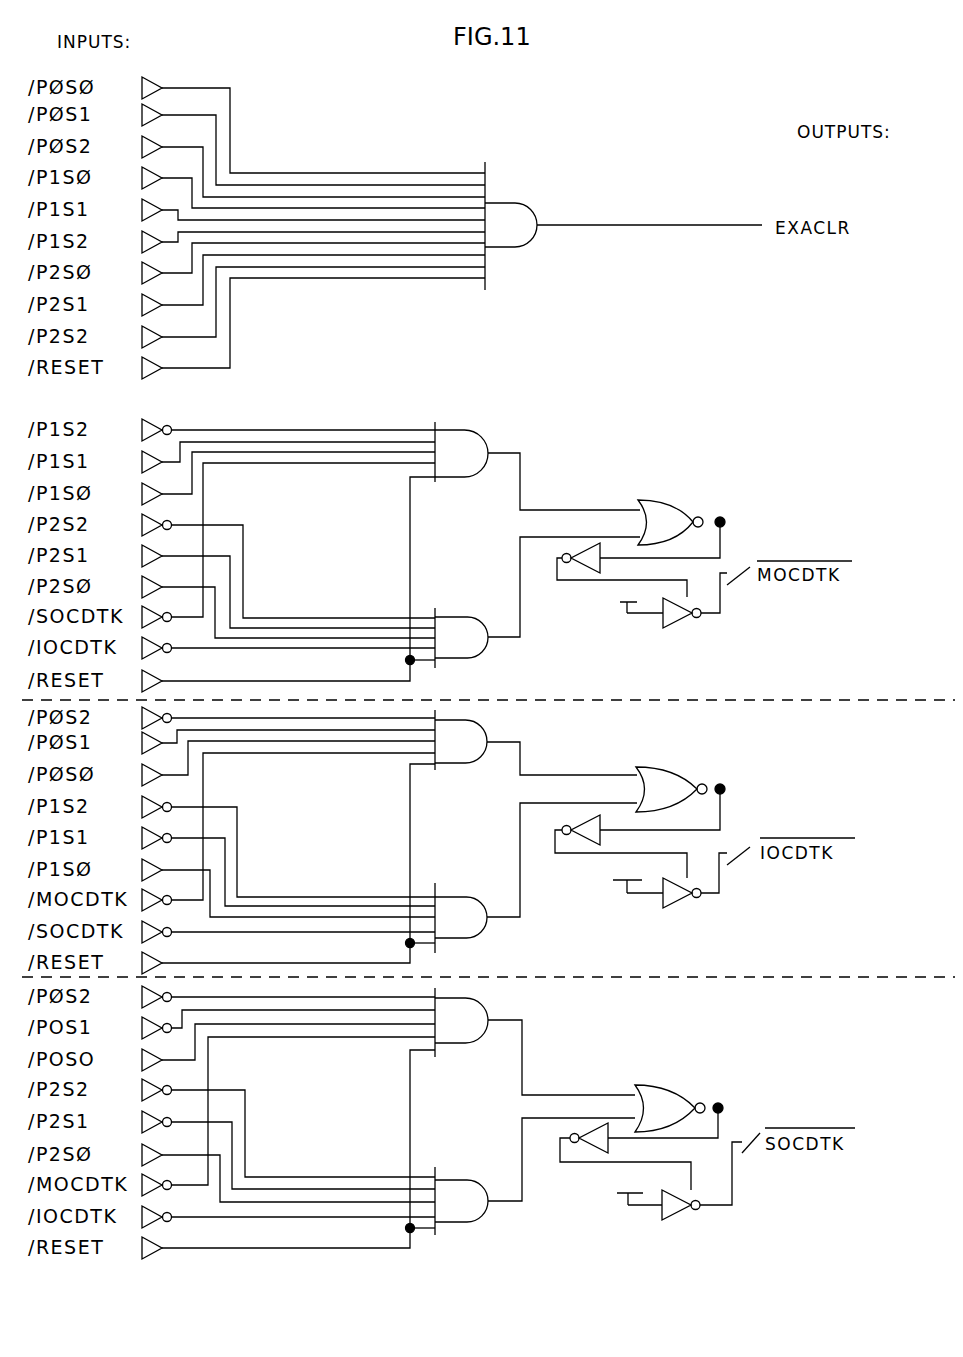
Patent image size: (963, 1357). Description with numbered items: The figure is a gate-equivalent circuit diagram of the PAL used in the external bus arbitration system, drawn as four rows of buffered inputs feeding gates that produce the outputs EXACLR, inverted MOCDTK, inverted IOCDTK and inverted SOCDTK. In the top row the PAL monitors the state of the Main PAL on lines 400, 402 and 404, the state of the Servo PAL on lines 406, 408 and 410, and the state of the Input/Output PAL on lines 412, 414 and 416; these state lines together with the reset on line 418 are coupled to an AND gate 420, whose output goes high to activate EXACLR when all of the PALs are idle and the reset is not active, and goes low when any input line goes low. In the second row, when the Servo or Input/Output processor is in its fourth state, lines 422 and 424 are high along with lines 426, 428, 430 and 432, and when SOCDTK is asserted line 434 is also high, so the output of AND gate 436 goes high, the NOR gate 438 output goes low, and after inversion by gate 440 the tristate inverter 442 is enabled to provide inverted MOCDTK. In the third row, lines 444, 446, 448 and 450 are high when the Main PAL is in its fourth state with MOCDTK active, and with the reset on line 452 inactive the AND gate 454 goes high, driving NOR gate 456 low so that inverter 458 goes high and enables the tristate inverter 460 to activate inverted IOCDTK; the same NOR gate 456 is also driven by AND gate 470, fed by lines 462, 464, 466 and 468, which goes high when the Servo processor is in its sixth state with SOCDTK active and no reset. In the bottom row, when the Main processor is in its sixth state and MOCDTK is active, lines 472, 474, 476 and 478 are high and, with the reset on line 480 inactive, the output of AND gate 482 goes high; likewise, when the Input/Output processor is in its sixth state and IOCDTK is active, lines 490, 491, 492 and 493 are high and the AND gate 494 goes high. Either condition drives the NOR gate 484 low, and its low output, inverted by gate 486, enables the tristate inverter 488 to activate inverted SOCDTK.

The line 400 is at (180, 88).
The line 402 is at (170, 114).
The line 404 is at (167, 147).
The line 406 is at (182, 200).
The line 408 is at (205, 197).
The line 410 is at (206, 247).
The line 412 is at (172, 250).
The line 414 is at (161, 308).
The line 416 is at (164, 339).
The reset line 418 is at (193, 370).
The AND gate 420 is at (521, 236).
The line 422 is at (300, 428).
The line 424 is at (245, 547).
The line 426 is at (351, 445).
The line 428 is at (302, 455).
The line 430 is at (265, 619).
The line 432 is at (331, 638).
The line 434 is at (240, 466).
The AND gate 436 is at (468, 440).
The NOR gate 438 is at (684, 510).
The inverter 440 is at (580, 575).
The tristate inverter 442 is at (684, 625).
The line 444 is at (242, 720).
The line 446 is at (282, 732).
The line 448 is at (318, 744).
The line 450 is at (362, 756).
The reset line 452 is at (192, 950).
The AND gate 454 is at (467, 757).
The NOR gate 456 is at (668, 780).
The inverter 458 is at (580, 826).
The tristate inverter 460 is at (683, 898).
The line 462 is at (252, 893).
The line 464 is at (290, 903).
The line 466 is at (343, 917).
The line 468 is at (373, 932).
The AND gate 470 is at (475, 930).
The line 472 is at (248, 999).
The line 474 is at (280, 1012).
The line 476 is at (313, 1025).
The line 478 is at (362, 1037).
The reset line 480 is at (267, 1250).
The AND gate 482 is at (477, 1017).
The NOR gate 484 is at (663, 1093).
The inverter 486 is at (588, 1155).
The tristate inverter 488 is at (680, 1222).
The line 490 is at (263, 1177).
The line 491 is at (312, 1172).
The line 492 is at (333, 1202).
The line 493 is at (282, 1218).
The AND gate 494 is at (463, 1208).